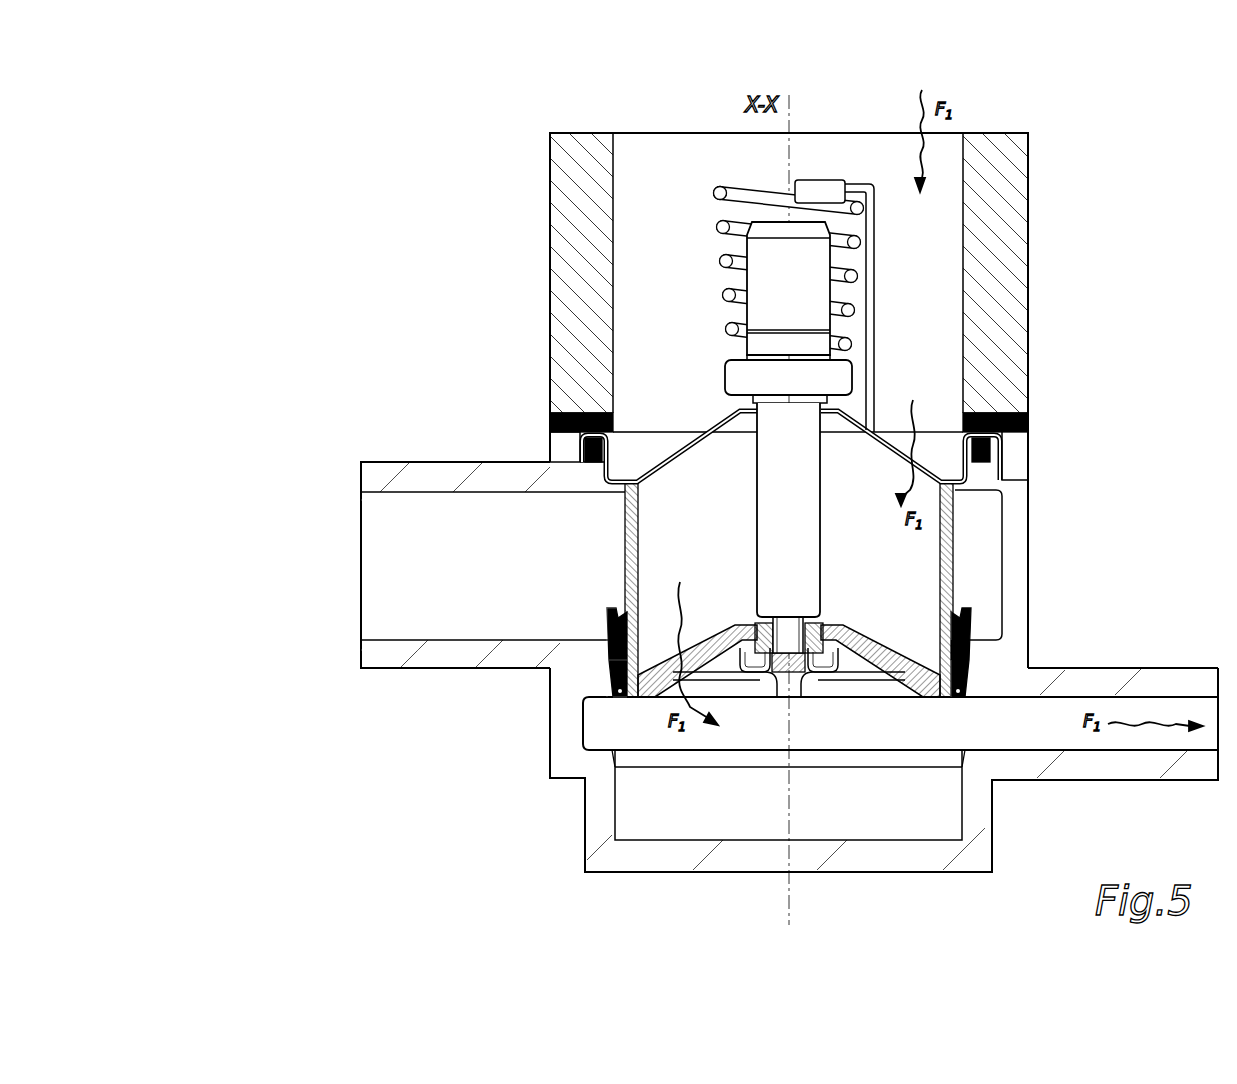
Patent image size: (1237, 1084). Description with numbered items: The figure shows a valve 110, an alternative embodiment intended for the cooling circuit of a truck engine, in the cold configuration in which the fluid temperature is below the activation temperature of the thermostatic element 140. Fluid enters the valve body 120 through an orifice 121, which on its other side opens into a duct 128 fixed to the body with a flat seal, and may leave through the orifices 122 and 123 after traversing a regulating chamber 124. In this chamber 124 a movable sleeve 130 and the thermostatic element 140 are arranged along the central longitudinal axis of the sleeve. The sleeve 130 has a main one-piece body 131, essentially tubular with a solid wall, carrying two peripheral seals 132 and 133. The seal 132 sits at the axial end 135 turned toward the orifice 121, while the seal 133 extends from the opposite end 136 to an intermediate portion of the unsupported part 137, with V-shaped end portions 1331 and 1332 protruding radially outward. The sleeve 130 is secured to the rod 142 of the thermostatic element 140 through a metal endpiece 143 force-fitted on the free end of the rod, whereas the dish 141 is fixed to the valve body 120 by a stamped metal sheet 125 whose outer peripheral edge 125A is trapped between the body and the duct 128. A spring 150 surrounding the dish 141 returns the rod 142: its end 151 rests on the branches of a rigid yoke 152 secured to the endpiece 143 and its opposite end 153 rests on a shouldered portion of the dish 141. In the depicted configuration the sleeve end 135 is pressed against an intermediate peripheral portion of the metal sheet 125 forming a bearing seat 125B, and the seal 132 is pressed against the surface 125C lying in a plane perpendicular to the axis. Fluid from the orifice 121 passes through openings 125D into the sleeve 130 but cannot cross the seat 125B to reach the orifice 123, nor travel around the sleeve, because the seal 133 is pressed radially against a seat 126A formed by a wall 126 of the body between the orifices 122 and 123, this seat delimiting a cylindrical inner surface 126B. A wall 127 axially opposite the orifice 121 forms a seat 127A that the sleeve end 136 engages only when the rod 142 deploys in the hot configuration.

The valve 110 is at (535, 167).
The valve body 120 is at (355, 460).
The orifice 121 is at (676, 444).
The orifice 122 is at (900, 723).
The orifice 123 is at (490, 532).
The regulating chamber 124 is at (983, 529).
The stamped metal sheet 125 is at (922, 446).
The outer peripheral edge 125A is at (590, 436).
The bearing seat 125B is at (622, 484).
The surface 125C is at (607, 470).
The openings 125D is at (695, 468).
The wall 126 is at (553, 678).
The seat 126A is at (484, 661).
The inner surface 126B is at (634, 698).
The wall 127 is at (580, 779).
The seat 127A is at (824, 795).
The duct 128 is at (573, 278).
The movable sleeve 130 is at (962, 516).
The main one-piece body 131 is at (222, 724).
The seal 132 is at (1000, 456).
The seal 133 is at (968, 658).
The axial end portion 1331 is at (968, 684).
The axial end portion 1332 is at (968, 628).
The axial end 135 is at (617, 576).
The end 136 is at (650, 655).
The unsupported part 137 is at (620, 597).
The thermostatic element 140 is at (650, 337).
The dish 141 is at (788, 288).
The rod 142 is at (792, 655).
The metal endpiece 143 is at (773, 650).
The spring 150 is at (727, 178).
The end 151 is at (708, 192).
The rigid yoke 152 is at (823, 188).
The end 153 is at (733, 356).